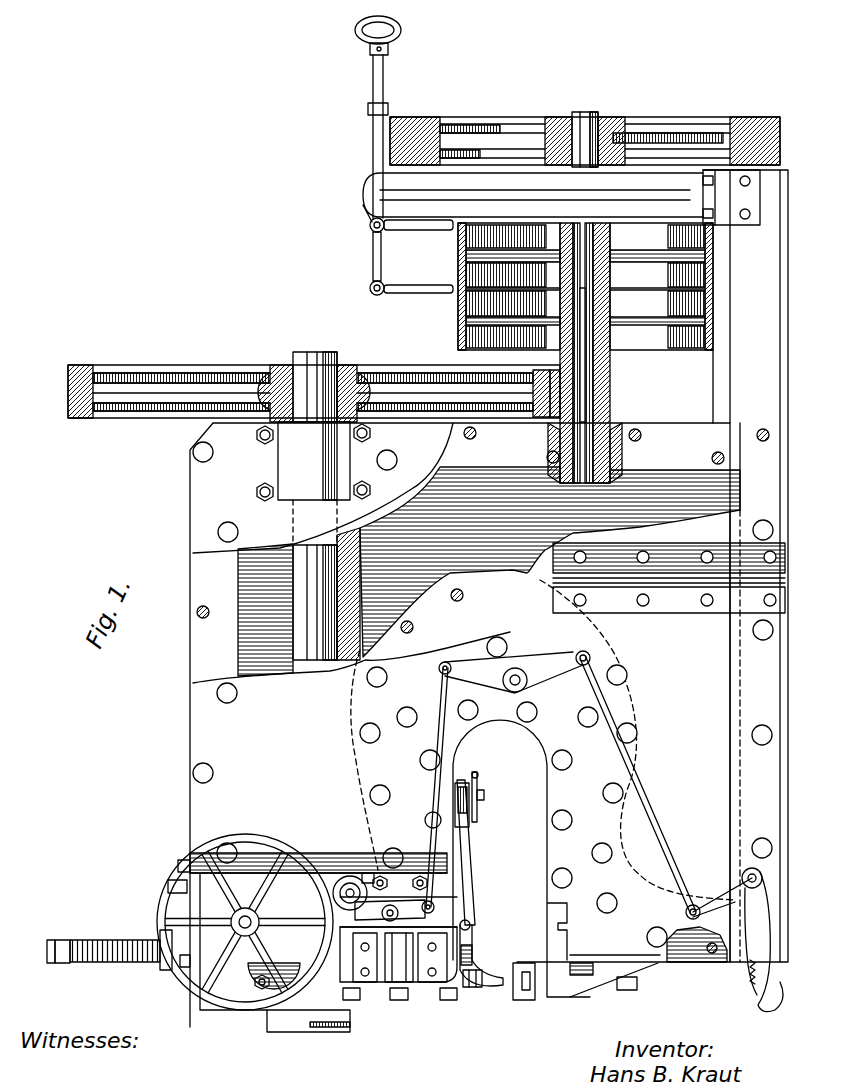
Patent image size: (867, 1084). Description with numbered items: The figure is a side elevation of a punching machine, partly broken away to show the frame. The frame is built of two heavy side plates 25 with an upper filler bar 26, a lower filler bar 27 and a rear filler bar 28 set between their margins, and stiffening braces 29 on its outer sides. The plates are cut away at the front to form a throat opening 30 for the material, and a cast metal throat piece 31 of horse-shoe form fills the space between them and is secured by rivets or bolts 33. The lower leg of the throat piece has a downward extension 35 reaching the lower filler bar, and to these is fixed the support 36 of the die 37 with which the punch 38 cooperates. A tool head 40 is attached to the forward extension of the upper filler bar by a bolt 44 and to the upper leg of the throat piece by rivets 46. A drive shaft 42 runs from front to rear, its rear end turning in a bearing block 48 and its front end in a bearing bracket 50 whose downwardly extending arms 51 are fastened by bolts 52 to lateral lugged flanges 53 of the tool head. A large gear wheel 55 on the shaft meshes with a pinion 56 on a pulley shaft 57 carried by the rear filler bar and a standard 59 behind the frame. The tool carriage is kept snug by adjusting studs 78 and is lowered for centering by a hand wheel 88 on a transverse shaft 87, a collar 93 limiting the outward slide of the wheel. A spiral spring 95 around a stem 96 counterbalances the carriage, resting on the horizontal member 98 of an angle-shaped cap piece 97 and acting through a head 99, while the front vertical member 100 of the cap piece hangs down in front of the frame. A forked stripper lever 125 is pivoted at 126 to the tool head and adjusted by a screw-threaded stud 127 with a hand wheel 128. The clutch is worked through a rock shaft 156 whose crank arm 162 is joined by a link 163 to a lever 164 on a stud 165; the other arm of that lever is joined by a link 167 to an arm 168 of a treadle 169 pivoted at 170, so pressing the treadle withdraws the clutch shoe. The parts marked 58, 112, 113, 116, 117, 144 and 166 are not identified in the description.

The side plates 25 is at (489, 598).
The upper filler bar 26 is at (240, 614).
The lower filler bar 27 is at (740, 517).
The rear filler bar 28 is at (509, 470).
The stiffening braces 29 is at (660, 608).
The throat opening 30 is at (521, 858).
The throat piece 31 is at (405, 598).
The rivets or bolts 33 is at (383, 790).
The downward extension 35 is at (697, 963).
The die support 36 is at (583, 988).
The die 37 is at (521, 1002).
The punch 38 is at (477, 990).
The tool head 40 is at (248, 862).
The drive shaft 42 is at (335, 578).
The bolt 44 is at (183, 862).
The rivets 46 is at (455, 795).
The bearing block 48 is at (313, 448).
The bearing bracket 50 is at (293, 1033).
The downwardly extending arms 51 is at (399, 1013).
The bolts 52 is at (383, 998).
The lateral lugged flanges 53 is at (407, 975).
The gear wheel 55 is at (192, 366).
The pinion 56 is at (612, 375).
The pulley shaft 57 is at (588, 360).
The hub boss 58 is at (610, 478).
The standard 59 is at (432, 196).
The adjusting studs 78 is at (360, 940).
The transverse shaft 87 is at (256, 982).
The hand wheel 88 is at (172, 890).
The collar 93 is at (278, 975).
The spring 95 is at (112, 940).
The stem 96 is at (48, 950).
The cap piece 97 is at (185, 968).
The horizontal member 98 is at (165, 932).
The head 99 is at (60, 940).
The front vertical member 100 is at (200, 965).
The bracket 112 is at (367, 872).
The pulley 113 is at (347, 882).
The hex nut 116 is at (380, 876).
The pulley hub 117 is at (343, 908).
The stripper lever 125 is at (476, 955).
The pivot 126 is at (472, 908).
The adjusting stud 127 is at (475, 772).
The hand wheel 128 is at (485, 796).
The pivot 144 is at (431, 911).
The rock shaft 156 is at (392, 920).
The crank arm 162 is at (418, 876).
The link 163 is at (443, 690).
The lever 164 is at (448, 660).
The stud 165 is at (516, 668).
The pivot 166 is at (580, 652).
The link 167 is at (642, 792).
The arm 168 is at (722, 897).
The foot lever 169 is at (764, 985).
The pivot 170 is at (746, 870).